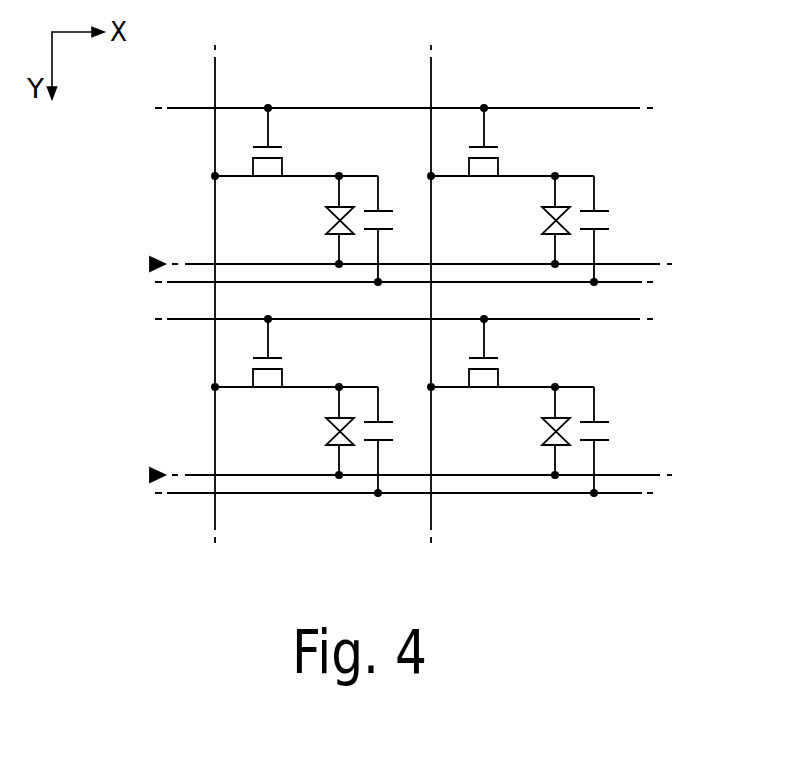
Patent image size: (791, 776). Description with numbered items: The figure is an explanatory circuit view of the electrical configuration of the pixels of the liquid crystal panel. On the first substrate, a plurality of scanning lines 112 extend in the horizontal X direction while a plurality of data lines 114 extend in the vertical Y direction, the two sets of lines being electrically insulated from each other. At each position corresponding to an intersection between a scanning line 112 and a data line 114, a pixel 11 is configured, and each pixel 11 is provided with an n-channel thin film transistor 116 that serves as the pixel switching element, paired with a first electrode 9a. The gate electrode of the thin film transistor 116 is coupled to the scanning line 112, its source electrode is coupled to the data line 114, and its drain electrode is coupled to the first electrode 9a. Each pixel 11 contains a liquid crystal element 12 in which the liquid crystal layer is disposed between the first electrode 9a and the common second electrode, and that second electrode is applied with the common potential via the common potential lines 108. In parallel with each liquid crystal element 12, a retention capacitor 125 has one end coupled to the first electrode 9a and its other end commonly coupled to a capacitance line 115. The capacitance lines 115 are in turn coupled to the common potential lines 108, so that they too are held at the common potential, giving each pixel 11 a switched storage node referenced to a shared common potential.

The data line 114 is at (250, 80).
The scanning line 112 is at (200, 110).
The common potential line 108 is at (202, 263).
The capacitance line 115 is at (632, 283).
The pixel 11 is at (315, 114).
The thin film transistor 116 is at (283, 168).
The retention capacitor 125 is at (401, 211).
The first electrode 9a is at (328, 205).
The liquid crystal element 12 is at (312, 236).